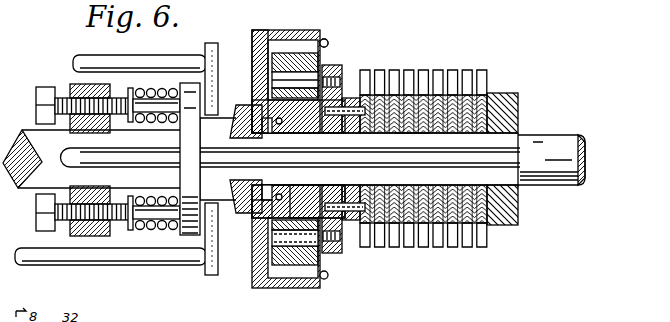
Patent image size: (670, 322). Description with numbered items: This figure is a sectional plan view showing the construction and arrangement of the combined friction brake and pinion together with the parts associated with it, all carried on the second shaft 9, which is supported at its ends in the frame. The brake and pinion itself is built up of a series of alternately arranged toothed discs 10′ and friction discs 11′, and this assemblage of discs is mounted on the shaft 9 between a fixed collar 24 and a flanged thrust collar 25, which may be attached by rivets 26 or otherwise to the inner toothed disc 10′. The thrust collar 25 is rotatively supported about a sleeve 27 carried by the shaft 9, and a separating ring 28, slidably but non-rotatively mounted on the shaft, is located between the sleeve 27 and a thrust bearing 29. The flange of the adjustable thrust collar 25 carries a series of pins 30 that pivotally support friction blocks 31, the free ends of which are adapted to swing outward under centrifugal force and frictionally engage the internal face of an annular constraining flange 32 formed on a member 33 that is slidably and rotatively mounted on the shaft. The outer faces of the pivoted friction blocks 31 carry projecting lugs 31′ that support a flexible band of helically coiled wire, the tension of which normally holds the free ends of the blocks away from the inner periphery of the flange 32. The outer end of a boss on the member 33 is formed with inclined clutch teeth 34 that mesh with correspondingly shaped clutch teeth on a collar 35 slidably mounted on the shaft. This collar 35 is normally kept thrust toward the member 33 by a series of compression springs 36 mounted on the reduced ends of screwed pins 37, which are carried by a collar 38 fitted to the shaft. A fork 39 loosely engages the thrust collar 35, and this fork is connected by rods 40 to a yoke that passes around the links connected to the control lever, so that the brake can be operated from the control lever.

The second shaft 9 is at (294, 159).
The toothed discs 10′ is at (438, 69).
The friction discs 11′ is at (424, 130).
The fixed collar 24 is at (505, 226).
The flanged thrust collar 25 is at (338, 67).
The rivets 26 is at (347, 107).
The sleeve 27 is at (352, 222).
The separating ring 28 is at (303, 210).
The thrust bearing 29 is at (262, 220).
The pins 30 is at (324, 39).
The friction blocks 31 is at (293, 80).
The projecting lugs 31′ is at (328, 271).
The annular constraining flange 32 is at (277, 32).
The member 33 is at (252, 63).
The inclined clutch teeth 34 is at (235, 110).
The collar 35 is at (191, 88).
The compression springs 36 is at (157, 92).
The screwed pins 37 is at (131, 231).
The collar 38 is at (86, 237).
The fork 39 is at (211, 276).
The rods 40 is at (73, 63).